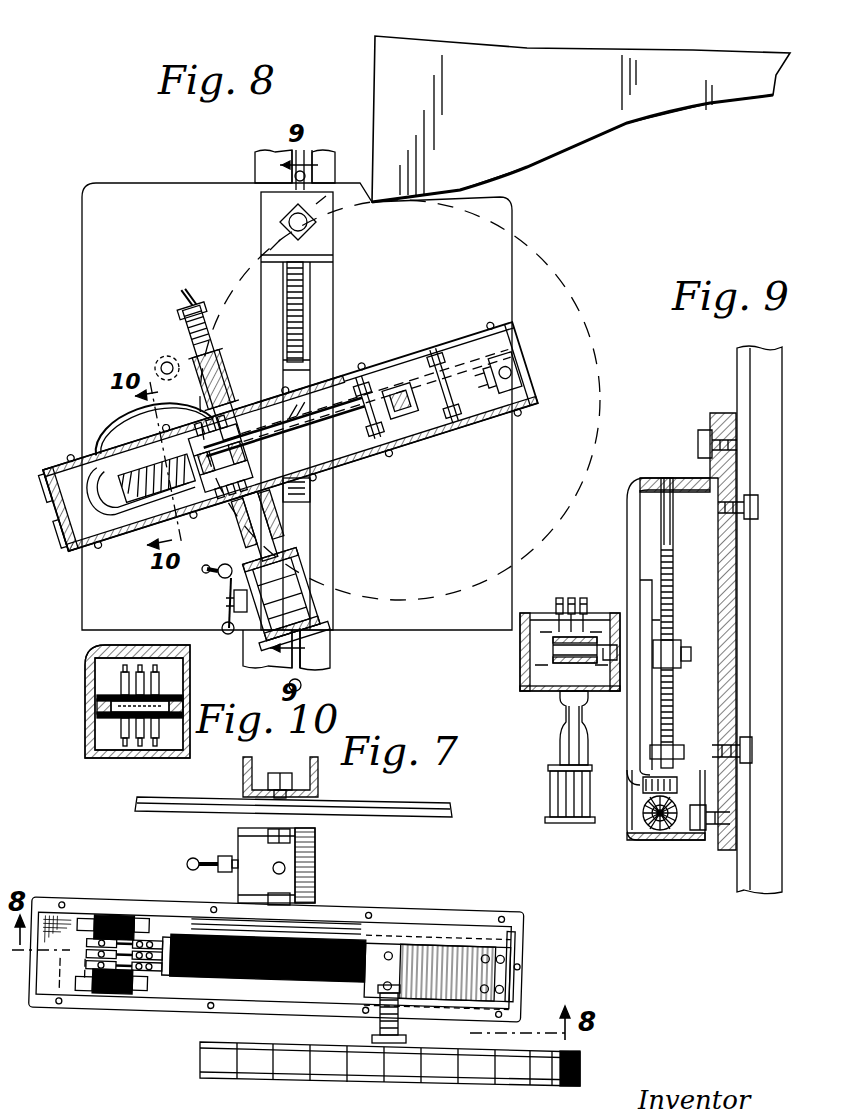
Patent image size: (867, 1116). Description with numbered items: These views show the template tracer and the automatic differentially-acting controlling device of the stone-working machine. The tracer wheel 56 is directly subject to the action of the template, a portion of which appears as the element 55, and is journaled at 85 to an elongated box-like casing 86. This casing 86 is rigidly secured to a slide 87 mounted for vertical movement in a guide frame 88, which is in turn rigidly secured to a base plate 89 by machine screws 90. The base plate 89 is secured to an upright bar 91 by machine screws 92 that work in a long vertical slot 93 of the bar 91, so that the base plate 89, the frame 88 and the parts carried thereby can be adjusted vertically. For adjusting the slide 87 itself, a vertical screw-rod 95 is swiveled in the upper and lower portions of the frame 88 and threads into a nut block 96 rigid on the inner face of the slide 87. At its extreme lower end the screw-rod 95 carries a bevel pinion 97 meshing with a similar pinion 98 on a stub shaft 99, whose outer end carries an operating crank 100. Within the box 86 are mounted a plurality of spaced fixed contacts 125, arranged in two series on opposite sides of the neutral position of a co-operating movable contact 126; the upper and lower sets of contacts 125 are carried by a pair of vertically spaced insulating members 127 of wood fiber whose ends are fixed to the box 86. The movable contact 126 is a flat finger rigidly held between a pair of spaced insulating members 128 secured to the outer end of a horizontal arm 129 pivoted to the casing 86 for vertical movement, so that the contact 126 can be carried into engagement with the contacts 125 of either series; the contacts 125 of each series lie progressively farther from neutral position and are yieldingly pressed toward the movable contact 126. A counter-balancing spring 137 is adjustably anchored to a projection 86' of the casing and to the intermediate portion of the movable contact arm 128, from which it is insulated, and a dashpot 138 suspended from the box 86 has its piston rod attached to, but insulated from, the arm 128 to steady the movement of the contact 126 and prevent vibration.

In FIG. 8, the blade 55 is at (581, 119).
In FIG. 8, the tracer wheel 56 is at (548, 253).
In FIG. 7, the tracer wheel 56 is at (355, 1074).
In FIG. 8, the journal 85 is at (410, 415).
In FIG. 7, the journal 85 is at (380, 1033).
In FIG. 8, the box-like casing 86 is at (287, 455).
In FIG. 9, the box-like casing 86 is at (545, 652).
In FIG. 10, the box-like casing 86 is at (115, 701).
In FIG. 7, the box-like casing 86 is at (276, 969).
In FIG. 8, the projection 86' is at (218, 363).
In FIG. 8, the slide 87 is at (298, 374).
In FIG. 9, the slide 87 is at (630, 593).
In FIG. 8, the guide frame 88 is at (334, 288).
In FIG. 9, the guide frame 88 is at (627, 524).
In FIG. 7, the guide frame 88 is at (316, 850).
In FIG. 8, the base plate 89 is at (297, 406).
In FIG. 9, the base plate 89 is at (727, 550).
In FIG. 7, the base plate 89 is at (406, 800).
In FIG. 8, the machine screws 90 is at (327, 226).
In FIG. 9, the machine screws 90 is at (704, 432).
In FIG. 7, the machine screws 90 is at (300, 833).
In FIG. 8, the upright bar 91 is at (264, 148).
In FIG. 9, the upright bar 91 is at (784, 380).
In FIG. 7, the upright bar 91 is at (318, 784).
In FIG. 9, the machine screws 92 is at (762, 502).
In FIG. 7, the machine screws 92 is at (284, 772).
In FIG. 8, the vertical slot 93 is at (280, 176).
In FIG. 9, the vertical slot 93 is at (752, 405).
In FIG. 8, the screw-rod 95 is at (298, 330).
In FIG. 9, the screw-rod 95 is at (674, 697).
In FIG. 7, the screw-rod 95 is at (286, 870).
In FIG. 9, the nut block 96 is at (670, 642).
In FIG. 9, the bevel pinion 97 is at (635, 815).
In FIG. 9, the pinion 98 is at (648, 828).
In FIG. 9, the stub shaft 99 is at (658, 825).
In FIG. 8, the operating crank 100 is at (222, 596).
In FIG. 7, the operating crank 100 is at (188, 860).
In FIG. 8, the fixed contacts 125 is at (176, 450).
In FIG. 9, the fixed contacts 125 is at (582, 600).
In FIG. 10, the fixed contacts 125 is at (125, 680).
In FIG. 7, the fixed contacts 125 is at (158, 985).
In FIG. 8, the movable contact 126 is at (222, 470).
In FIG. 10, the movable contact 126 is at (97, 710).
In FIG. 7, the movable contact 126 is at (160, 920).
In FIG. 8, the insulating members 127 is at (140, 515).
In FIG. 10, the insulating members 127 is at (182, 725).
In FIG. 7, the insulating members 127 is at (128, 910).
In FIG. 8, the insulating members 128 is at (330, 450).
In FIG. 9, the insulating members 128 is at (552, 648).
In FIG. 7, the insulating members 128 is at (348, 940).
In FIG. 8, the horizontal arm 129 is at (400, 392).
In FIG. 7, the horizontal arm 129 is at (440, 930).
In FIG. 8, the counter-balancing spring 137 is at (240, 366).
In FIG. 8, the dashpot 138 is at (300, 580).
In FIG. 9, the dashpot 138 is at (548, 788).